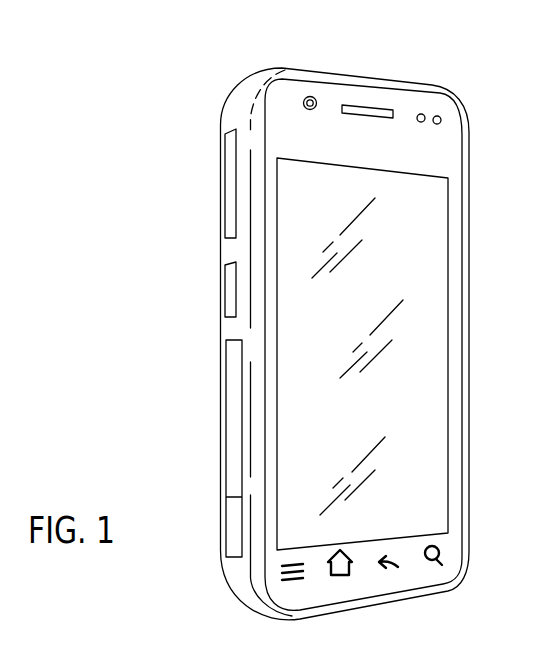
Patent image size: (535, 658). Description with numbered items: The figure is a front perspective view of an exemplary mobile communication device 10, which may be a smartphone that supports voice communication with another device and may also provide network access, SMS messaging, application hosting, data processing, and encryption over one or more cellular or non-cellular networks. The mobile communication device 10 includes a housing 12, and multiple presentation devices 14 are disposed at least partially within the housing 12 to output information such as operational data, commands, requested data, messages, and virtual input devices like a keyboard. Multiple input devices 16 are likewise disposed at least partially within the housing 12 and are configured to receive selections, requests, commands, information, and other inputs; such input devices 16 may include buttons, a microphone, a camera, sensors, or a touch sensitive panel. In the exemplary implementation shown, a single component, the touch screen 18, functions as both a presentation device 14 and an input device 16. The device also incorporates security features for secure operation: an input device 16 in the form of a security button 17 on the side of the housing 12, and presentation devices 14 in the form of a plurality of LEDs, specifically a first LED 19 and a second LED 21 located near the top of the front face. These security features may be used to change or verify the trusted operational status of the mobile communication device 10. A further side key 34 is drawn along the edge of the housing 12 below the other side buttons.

The mobile communication device 10 is at (335, 330).
The housing 12 is at (242, 592).
The presentation device 14 is at (365, 108).
The input device 16 is at (227, 211).
The security button 17 is at (228, 303).
The touch screen 18 is at (437, 453).
The first LED 19 is at (423, 113).
The second LED 21 is at (441, 120).
The side key 34 is at (228, 523).